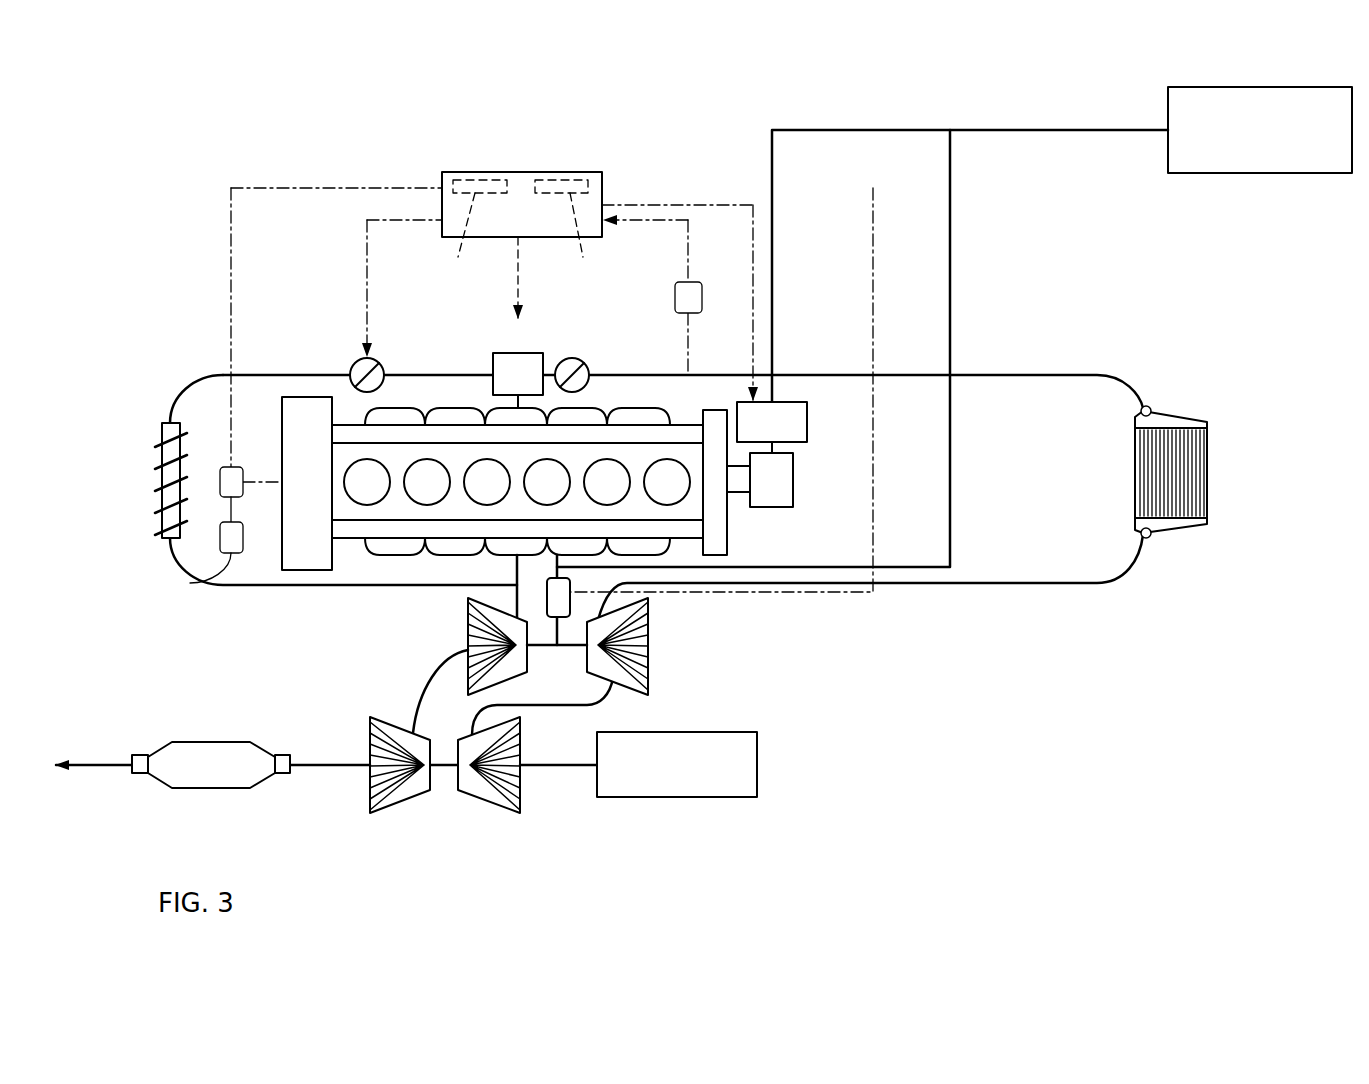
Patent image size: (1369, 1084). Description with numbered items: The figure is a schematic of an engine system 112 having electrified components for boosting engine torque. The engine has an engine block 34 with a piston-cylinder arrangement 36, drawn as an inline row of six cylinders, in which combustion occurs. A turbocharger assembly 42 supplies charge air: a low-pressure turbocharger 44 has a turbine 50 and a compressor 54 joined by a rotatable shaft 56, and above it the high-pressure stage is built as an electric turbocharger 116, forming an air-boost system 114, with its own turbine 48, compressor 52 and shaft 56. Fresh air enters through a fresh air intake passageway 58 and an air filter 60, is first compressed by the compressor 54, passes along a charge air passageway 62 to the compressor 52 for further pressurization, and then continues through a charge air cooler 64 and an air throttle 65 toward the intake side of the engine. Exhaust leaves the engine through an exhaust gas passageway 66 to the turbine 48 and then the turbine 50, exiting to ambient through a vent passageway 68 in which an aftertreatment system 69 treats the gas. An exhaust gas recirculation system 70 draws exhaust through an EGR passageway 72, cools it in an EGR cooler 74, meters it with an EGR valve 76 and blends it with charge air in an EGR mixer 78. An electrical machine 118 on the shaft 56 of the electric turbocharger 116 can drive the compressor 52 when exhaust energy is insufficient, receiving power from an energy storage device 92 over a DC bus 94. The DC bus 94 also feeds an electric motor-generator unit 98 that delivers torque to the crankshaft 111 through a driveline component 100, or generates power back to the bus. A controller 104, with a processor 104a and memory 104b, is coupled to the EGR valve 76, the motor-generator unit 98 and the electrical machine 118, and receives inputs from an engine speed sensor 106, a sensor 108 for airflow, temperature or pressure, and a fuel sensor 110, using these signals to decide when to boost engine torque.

The engine block 34 is at (295, 395).
The piston-cylinder arrangement 36 is at (360, 480).
The turbocharger assembly 42 is at (519, 654).
The low-pressure turbocharger 44 is at (425, 800).
The turbine 48 is at (468, 612).
The turbine 50 is at (370, 795).
The compressor 52 is at (653, 672).
The compressor 54 is at (500, 813).
The rotatable shaft 56 is at (540, 645).
The fresh air intake passageway 58 is at (560, 770).
The air filter 60 is at (675, 797).
The charge air passageway 62 is at (712, 375).
The charge air cooler 64 is at (1210, 465).
The air throttle 65 is at (578, 362).
The exhaust gas passageway 66 is at (465, 598).
The vent passageway 68 is at (332, 765).
The aftertreatment system 69 is at (210, 788).
The exhaust gas recirculation system 70 is at (158, 410).
The EGR passageway 72 is at (222, 588).
The EGR cooler 74 is at (160, 452).
The EGR valve 76 is at (378, 362).
The EGR mixer 78 is at (500, 353).
The energy storage device 92 is at (1258, 173).
The DC bus 94 is at (772, 150).
The electric motor-generator unit 98 is at (810, 425).
The driveline component 100 is at (815, 512).
The controller 104 is at (529, 222).
The processor 104a is at (471, 238).
The memory 104b is at (580, 235).
The engine speed sensor 106 is at (222, 480).
The sensor 108 is at (675, 298).
The fuel sensor 110 is at (190, 583).
The crankshaft 111 is at (740, 495).
The engine system 112 is at (1135, 624).
The air-boost system 114 is at (712, 627).
The electric turbocharger 116 is at (675, 657).
The electrical machine 118 is at (572, 600).